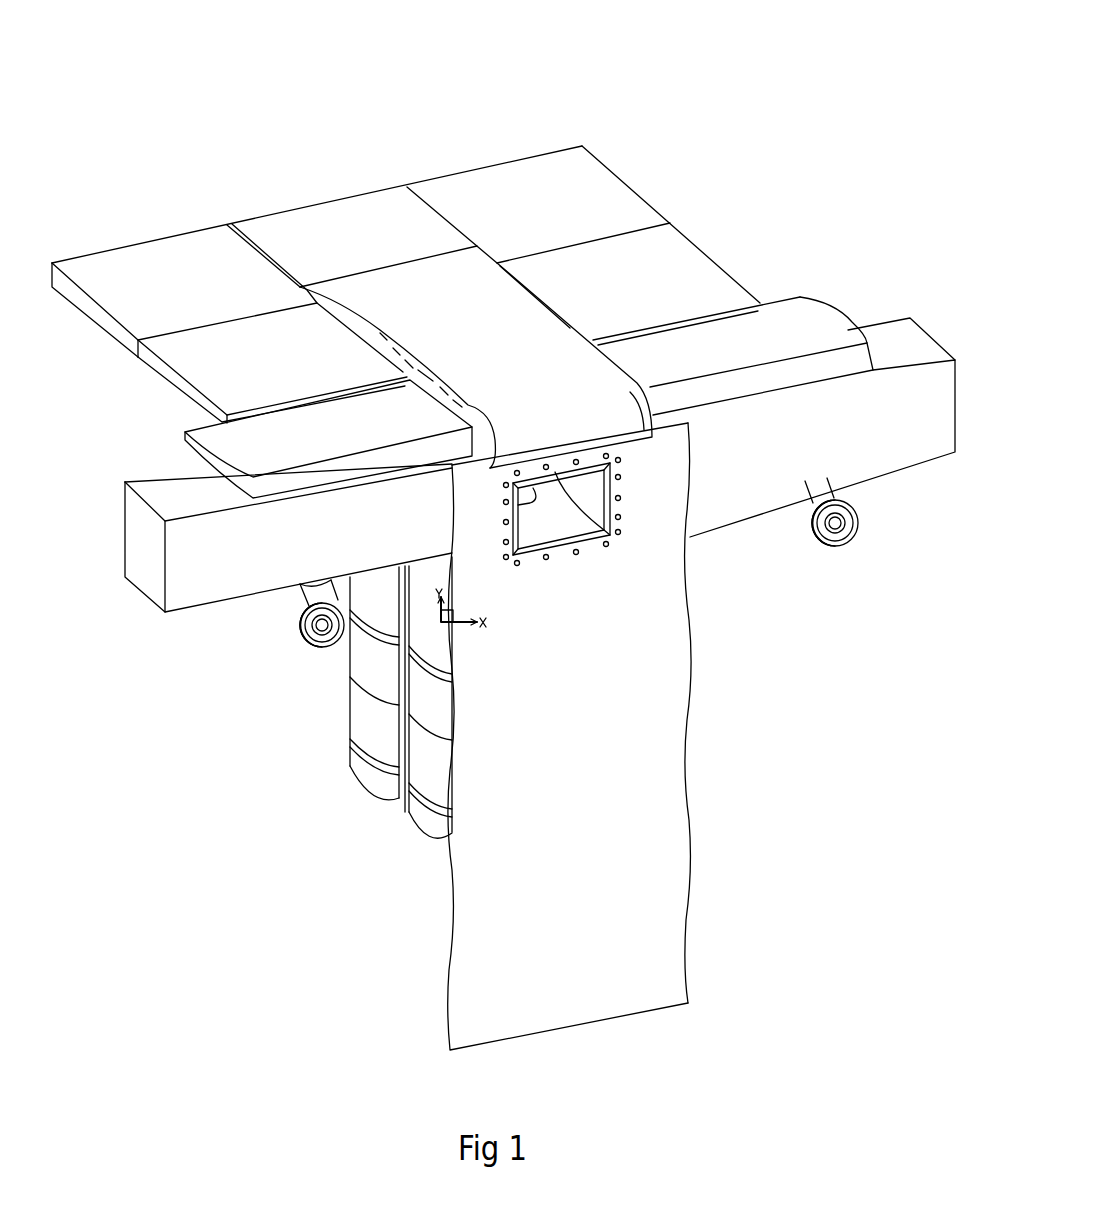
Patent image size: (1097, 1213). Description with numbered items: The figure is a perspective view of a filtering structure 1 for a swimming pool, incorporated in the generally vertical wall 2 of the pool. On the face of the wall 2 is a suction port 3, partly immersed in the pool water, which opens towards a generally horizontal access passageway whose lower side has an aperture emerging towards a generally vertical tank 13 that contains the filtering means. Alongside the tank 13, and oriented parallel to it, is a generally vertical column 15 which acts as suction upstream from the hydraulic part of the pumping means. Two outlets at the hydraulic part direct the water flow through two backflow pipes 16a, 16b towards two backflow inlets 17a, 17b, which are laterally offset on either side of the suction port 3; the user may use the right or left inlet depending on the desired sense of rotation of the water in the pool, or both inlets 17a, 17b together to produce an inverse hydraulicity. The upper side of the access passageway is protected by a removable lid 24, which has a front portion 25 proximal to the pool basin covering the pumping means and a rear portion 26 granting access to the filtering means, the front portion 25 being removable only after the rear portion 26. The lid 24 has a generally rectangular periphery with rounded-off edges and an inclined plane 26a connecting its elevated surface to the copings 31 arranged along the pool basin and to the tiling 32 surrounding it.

The filtering structure 1 is at (674, 96).
The vertical wall 2 is at (700, 660).
The suction port 3 is at (570, 522).
The tank 13 is at (377, 777).
The column 15 is at (430, 815).
The backflow pipe 16a is at (300, 596).
The backflow inlet 17a is at (323, 645).
The backflow pipe 16b is at (797, 493).
The backflow inlet 17b is at (850, 527).
The removable lid 24 is at (575, 291).
The front portion 25 is at (546, 353).
The rear portion 26 is at (445, 295).
The inclined plane 26a is at (367, 284).
The copings 31 is at (306, 469).
The tiling 32 is at (183, 267).